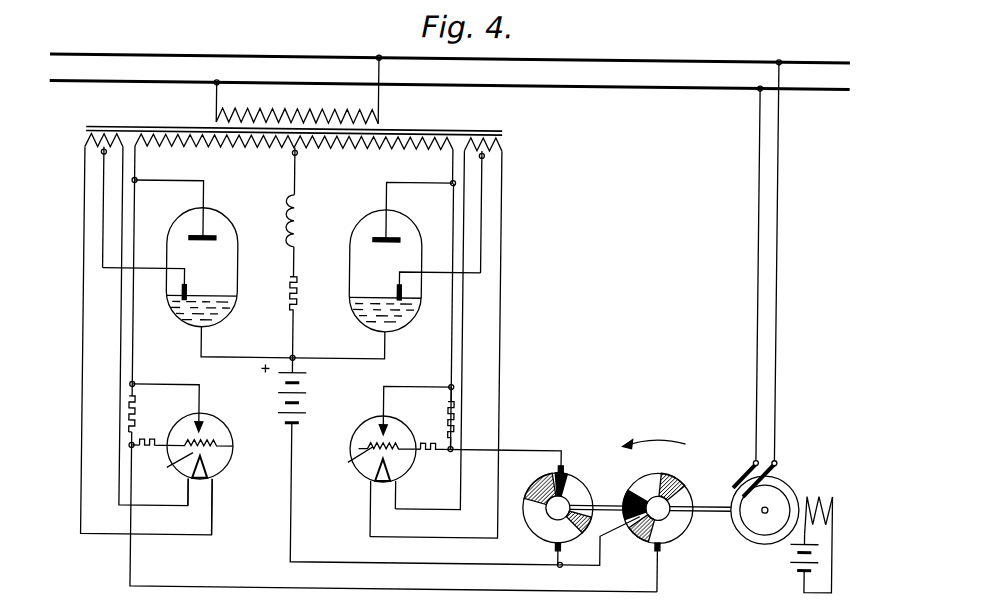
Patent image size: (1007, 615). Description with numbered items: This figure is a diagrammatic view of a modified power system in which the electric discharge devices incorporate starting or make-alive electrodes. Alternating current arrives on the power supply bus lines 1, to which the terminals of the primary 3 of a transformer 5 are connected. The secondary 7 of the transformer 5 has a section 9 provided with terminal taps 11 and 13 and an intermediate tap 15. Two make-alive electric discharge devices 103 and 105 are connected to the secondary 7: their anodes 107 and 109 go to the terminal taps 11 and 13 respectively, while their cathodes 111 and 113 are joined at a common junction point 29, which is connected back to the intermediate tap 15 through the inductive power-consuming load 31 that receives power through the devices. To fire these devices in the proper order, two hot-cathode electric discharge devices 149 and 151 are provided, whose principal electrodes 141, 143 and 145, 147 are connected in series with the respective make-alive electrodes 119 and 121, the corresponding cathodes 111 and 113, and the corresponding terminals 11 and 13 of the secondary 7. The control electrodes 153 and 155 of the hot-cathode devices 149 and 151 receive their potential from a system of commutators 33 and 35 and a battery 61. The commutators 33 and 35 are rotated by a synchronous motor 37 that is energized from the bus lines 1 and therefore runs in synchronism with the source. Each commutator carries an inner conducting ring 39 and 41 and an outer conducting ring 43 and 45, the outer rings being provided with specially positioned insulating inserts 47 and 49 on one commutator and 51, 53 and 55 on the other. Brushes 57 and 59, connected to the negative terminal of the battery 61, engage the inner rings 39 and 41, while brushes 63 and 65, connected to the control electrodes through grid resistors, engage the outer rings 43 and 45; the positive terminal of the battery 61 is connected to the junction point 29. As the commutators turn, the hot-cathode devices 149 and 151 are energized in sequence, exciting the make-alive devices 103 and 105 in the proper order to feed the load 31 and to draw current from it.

The power supply bus lines 1 is at (591, 83).
The primary 3 is at (377, 120).
The transformer 5 is at (454, 115).
The secondary 7 is at (50, 160).
The section 9 is at (220, 149).
The terminal tap 11 is at (135, 152).
The terminal tap 13 is at (450, 152).
The intermediate tap 15 is at (296, 152).
The junction point 29 is at (295, 357).
The inductive power-consuming load 31 is at (303, 244).
The battery 61 is at (318, 397).
The make-alive electric discharge device 103 is at (221, 217).
The make-alive electric discharge device 105 is at (396, 219).
The anode 107 is at (190, 238).
The anode 109 is at (372, 238).
The cathode 111 is at (165, 318).
The cathode 113 is at (404, 312).
The make-alive electrode 119 is at (181, 290).
The make-alive electrode 121 is at (402, 288).
The principal electrode 141 is at (204, 426).
The principal electrode 145 is at (378, 428).
The principal electrode 143 is at (208, 478).
The principal electrode 147 is at (375, 478).
The hot-cathode electric discharge device 149 is at (230, 455).
The hot-cathode electric discharge device 151 is at (400, 420).
The control electrode 153 is at (170, 470).
The control electrode 155 is at (349, 458).
The commutator 35 is at (561, 503).
The commutator 33 is at (663, 520).
The synchronous motor 37 is at (758, 565).
The inner conducting ring 39 is at (690, 490).
The inner conducting ring 41 is at (584, 482).
The outer conducting ring 43 is at (695, 522).
The outer conducting ring 45 is at (536, 522).
The insulating insert 47 is at (645, 538).
The insulating insert 49 is at (672, 470).
The insulating insert 51 is at (557, 468).
The insulating insert 53 is at (594, 520).
The insulating insert 55 is at (535, 488).
The brush 57 is at (636, 492).
The brush 59 is at (555, 544).
The brush 63 is at (663, 550).
The brush 65 is at (566, 466).